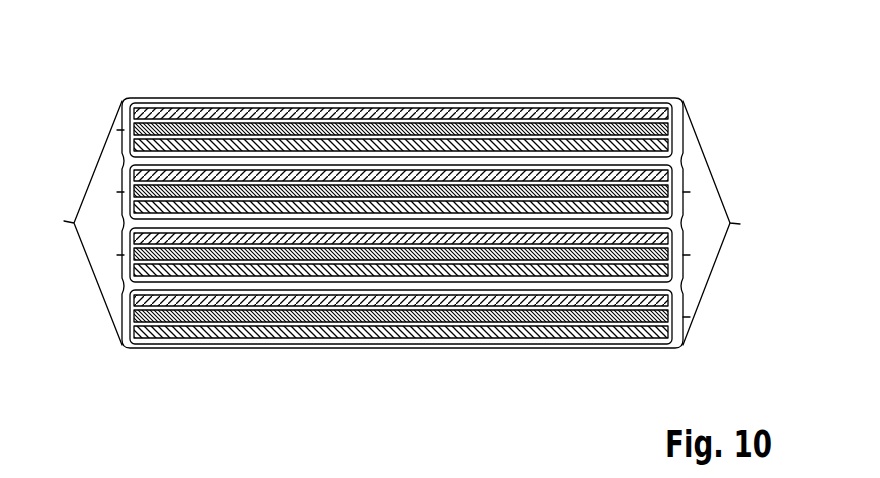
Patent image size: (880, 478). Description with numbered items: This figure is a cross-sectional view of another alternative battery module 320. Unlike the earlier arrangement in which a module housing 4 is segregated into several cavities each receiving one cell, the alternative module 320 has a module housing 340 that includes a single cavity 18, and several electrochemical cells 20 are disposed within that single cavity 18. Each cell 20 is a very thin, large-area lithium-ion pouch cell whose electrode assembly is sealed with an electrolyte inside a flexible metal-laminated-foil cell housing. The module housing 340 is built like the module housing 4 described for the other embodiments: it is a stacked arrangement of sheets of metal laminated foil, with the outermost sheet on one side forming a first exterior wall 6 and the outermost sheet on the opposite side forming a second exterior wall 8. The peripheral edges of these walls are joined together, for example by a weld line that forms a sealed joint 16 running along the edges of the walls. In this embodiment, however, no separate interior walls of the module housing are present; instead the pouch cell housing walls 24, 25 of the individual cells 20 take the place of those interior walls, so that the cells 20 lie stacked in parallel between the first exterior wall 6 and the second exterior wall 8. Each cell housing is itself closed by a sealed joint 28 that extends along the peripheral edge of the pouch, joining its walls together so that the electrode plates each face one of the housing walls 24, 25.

The alternative module 320 is at (254, 86).
The module housing 4 is at (531, 97).
The first exterior wall 6 is at (368, 223).
The second exterior wall 8 is at (683, 347).
The sealed joint 16 is at (731, 222).
The cavity 18 is at (108, 243).
The electrochemical cell 20 is at (128, 167).
The first exterior wall of cell housing 24 is at (128, 296).
The pouch cell housing wall 25 is at (127, 336).
The sealed joint 28 is at (125, 315).
The module housing 340 is at (90, 190).